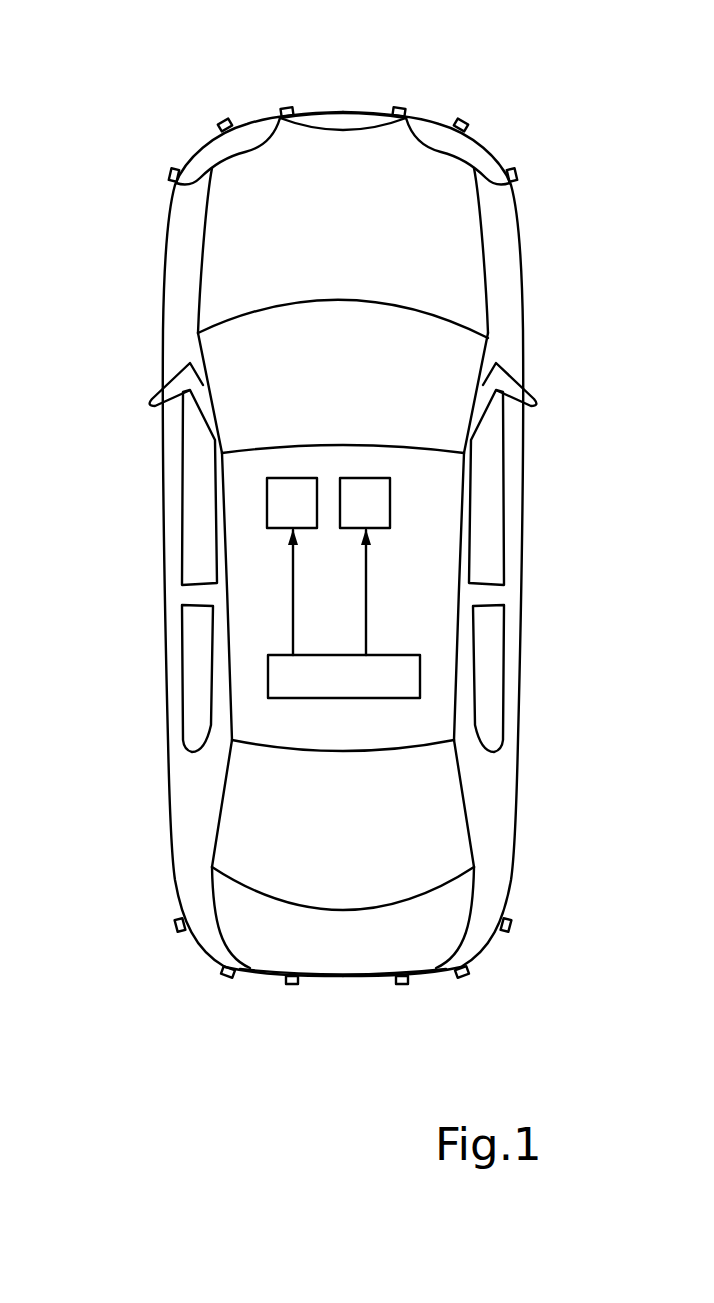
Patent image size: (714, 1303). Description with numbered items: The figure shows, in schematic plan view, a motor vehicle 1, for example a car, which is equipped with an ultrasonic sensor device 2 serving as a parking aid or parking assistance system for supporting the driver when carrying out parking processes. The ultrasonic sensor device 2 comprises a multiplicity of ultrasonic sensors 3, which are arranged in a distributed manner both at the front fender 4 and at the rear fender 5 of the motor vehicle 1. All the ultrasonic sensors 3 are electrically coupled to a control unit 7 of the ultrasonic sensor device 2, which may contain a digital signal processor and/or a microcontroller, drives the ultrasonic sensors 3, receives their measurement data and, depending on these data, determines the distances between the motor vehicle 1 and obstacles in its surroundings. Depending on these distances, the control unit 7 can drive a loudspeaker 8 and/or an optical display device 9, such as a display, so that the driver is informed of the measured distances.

The motor vehicle 1 is at (520, 497).
The ultrasonic sensor device 2 is at (155, 118).
The ultrasonic sensors 3 is at (222, 119).
The front fender 4 is at (343, 113).
The rear fender 5 is at (348, 978).
The control unit 7 is at (420, 676).
The loudspeaker 8 is at (267, 507).
The optical display device 9 is at (390, 503).